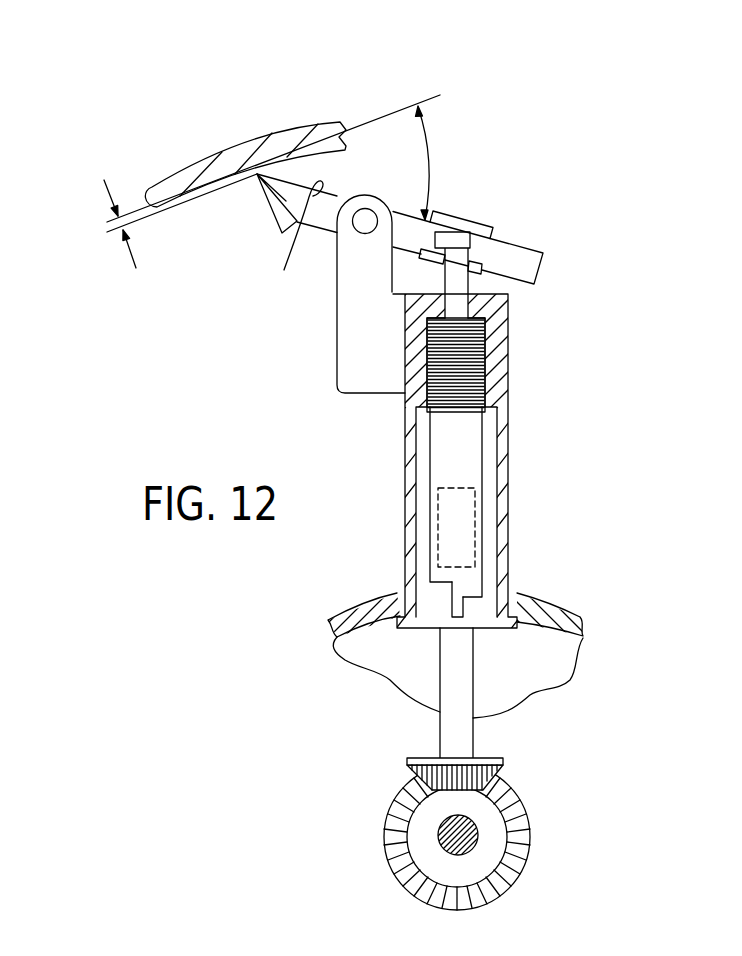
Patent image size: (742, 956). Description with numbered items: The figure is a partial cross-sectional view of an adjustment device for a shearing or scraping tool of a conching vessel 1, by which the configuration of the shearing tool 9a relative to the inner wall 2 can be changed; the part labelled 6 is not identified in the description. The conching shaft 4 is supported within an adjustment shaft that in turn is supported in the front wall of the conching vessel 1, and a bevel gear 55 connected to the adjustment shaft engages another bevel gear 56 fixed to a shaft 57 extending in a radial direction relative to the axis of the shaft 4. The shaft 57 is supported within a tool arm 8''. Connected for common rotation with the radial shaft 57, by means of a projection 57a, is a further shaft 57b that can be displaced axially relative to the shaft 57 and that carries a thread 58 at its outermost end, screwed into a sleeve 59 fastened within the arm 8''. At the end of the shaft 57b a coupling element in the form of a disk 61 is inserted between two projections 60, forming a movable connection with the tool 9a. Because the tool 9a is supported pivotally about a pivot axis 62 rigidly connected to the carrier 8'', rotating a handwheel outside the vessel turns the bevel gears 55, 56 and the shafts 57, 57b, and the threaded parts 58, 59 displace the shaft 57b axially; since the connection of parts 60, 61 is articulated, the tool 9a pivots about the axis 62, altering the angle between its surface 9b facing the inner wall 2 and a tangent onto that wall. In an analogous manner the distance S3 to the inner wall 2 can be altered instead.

The conching vessel 1 is at (182, 170).
The inner wall 2 is at (288, 156).
The conching shaft 4 is at (440, 846).
The frame 6 is at (480, 222).
The tool arm 8'' is at (462, 462).
The shearing tool 9a is at (286, 201).
The surface of the tool 9b is at (294, 237).
The bevel gear 55 is at (508, 892).
The bevel gear 56 is at (407, 761).
The shaft 57 is at (463, 668).
The projection 57a is at (466, 590).
The shaft 57b is at (470, 455).
The thread 58 is at (477, 372).
The sleeve 59 is at (430, 370).
The projections 60 is at (425, 258).
The disk 61 is at (500, 240).
The pivot axis 62 is at (363, 228).
The distance S3 is at (99, 224).
The tangent line T is at (438, 96).